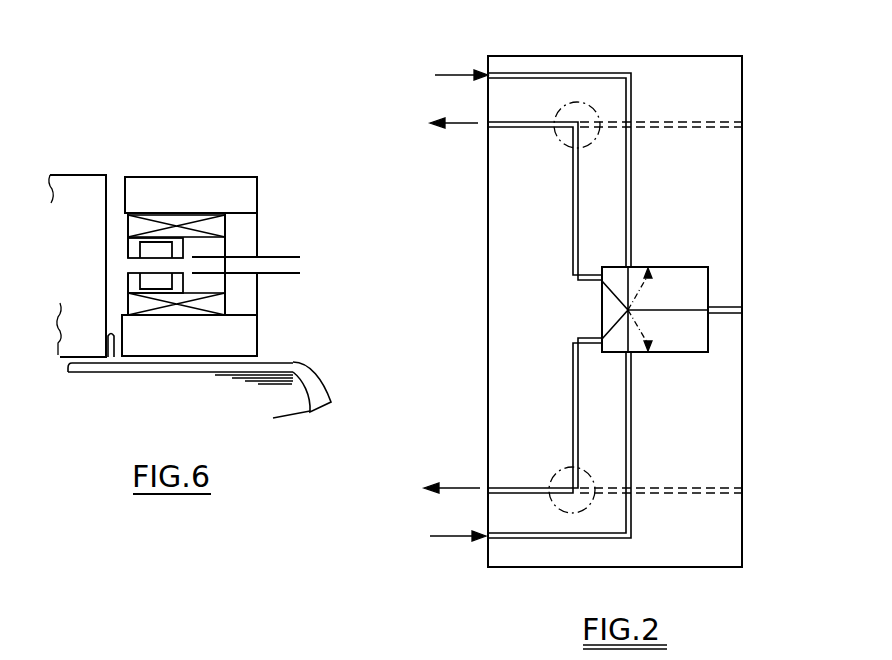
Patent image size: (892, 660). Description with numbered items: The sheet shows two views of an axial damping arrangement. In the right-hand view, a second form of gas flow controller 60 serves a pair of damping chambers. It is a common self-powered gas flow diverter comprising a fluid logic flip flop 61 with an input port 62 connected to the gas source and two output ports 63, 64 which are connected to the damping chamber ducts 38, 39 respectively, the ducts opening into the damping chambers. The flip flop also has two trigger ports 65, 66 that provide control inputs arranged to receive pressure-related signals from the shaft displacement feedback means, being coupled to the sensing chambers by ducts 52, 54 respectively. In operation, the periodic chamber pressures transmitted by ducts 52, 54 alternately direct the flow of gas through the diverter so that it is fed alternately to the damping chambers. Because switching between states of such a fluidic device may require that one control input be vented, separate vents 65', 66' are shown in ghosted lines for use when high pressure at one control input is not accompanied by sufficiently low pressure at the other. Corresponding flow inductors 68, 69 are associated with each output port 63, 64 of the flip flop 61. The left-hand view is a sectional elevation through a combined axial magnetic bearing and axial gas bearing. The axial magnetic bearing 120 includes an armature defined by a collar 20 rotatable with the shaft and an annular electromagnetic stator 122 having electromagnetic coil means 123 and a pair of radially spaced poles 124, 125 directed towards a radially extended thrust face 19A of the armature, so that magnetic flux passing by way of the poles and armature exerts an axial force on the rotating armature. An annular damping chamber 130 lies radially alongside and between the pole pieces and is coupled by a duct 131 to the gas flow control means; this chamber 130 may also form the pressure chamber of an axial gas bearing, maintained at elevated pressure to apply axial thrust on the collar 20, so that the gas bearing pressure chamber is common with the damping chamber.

In FIG. 6, the axial magnetic bearing 120 is at (124, 170).
In FIG. 6, the annular electromagnetic stator 122 is at (238, 338).
In FIG. 6, the electromagnetic coil means 123 is at (213, 302).
In FIG. 6, the pole 124 is at (207, 225).
In FIG. 6, the pole 125 is at (150, 338).
In FIG. 6, the annular damping chamber 130 is at (143, 267).
In FIG. 6, the duct 131 is at (303, 266).
In FIG. 6, the thrust face 19A is at (111, 338).
In FIG. 6, the collar 20 is at (83, 343).
In FIG. 2, the gas flow controller 60 is at (742, 63).
In FIG. 2, the fluid logic flip flop 61 is at (708, 353).
In FIG. 2, the input port 62 is at (745, 313).
In FIG. 2, the output port 63 is at (488, 127).
In FIG. 2, the output port 64 is at (487, 487).
In FIG. 2, the trigger port 65 is at (536, 153).
In FIG. 2, the vent 65' is at (672, 267).
In FIG. 2, the trigger port 66 is at (514, 469).
In FIG. 2, the vent 66' is at (657, 365).
In FIG. 2, the flow inductor 68 is at (562, 147).
In FIG. 2, the flow inductor 69 is at (557, 477).
In FIG. 2, the duct 52 is at (446, 76).
In FIG. 2, the duct 54 is at (445, 536).
In FIG. 2, the duct 38 is at (460, 127).
In FIG. 2, the duct 39 is at (456, 488).